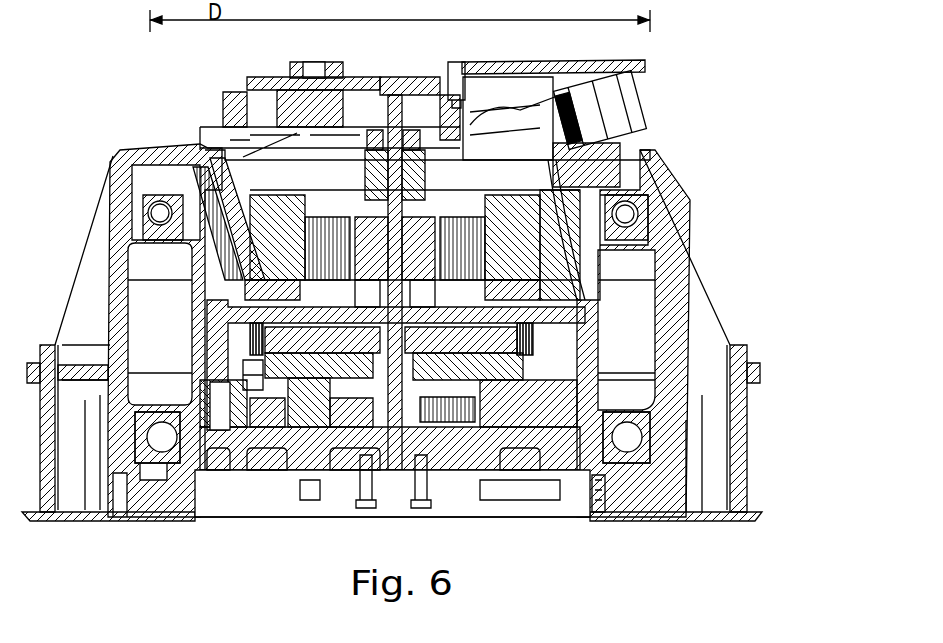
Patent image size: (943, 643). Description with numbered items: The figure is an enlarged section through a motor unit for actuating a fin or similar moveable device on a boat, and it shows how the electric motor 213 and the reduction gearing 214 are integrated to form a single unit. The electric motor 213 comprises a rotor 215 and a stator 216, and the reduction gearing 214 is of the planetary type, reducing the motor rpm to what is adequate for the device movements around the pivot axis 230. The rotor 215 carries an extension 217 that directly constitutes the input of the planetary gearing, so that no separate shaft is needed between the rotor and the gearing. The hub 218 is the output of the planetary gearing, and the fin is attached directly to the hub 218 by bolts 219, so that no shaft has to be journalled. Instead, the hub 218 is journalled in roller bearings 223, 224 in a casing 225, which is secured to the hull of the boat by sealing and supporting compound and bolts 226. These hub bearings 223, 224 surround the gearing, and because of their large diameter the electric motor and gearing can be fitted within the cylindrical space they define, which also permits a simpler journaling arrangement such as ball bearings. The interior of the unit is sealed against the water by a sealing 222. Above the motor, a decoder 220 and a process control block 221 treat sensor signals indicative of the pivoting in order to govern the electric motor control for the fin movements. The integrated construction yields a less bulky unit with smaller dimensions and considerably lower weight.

The electric motor 213 is at (765, 221).
The reduction gearing 214 is at (772, 420).
The rotor 215 is at (667, 153).
The stator 216 is at (455, 228).
The extension 217 is at (520, 315).
The hub 218 is at (590, 472).
The bolts 219 is at (482, 497).
The decoder 220 is at (408, 132).
The process control block 221 is at (467, 127).
The sealing 222 is at (598, 518).
The roller bearing 223 is at (503, 232).
The roller bearing 224 is at (628, 440).
The casing 225 is at (673, 267).
The bolts 226 is at (743, 458).
The pivot axis 230 is at (393, 522).